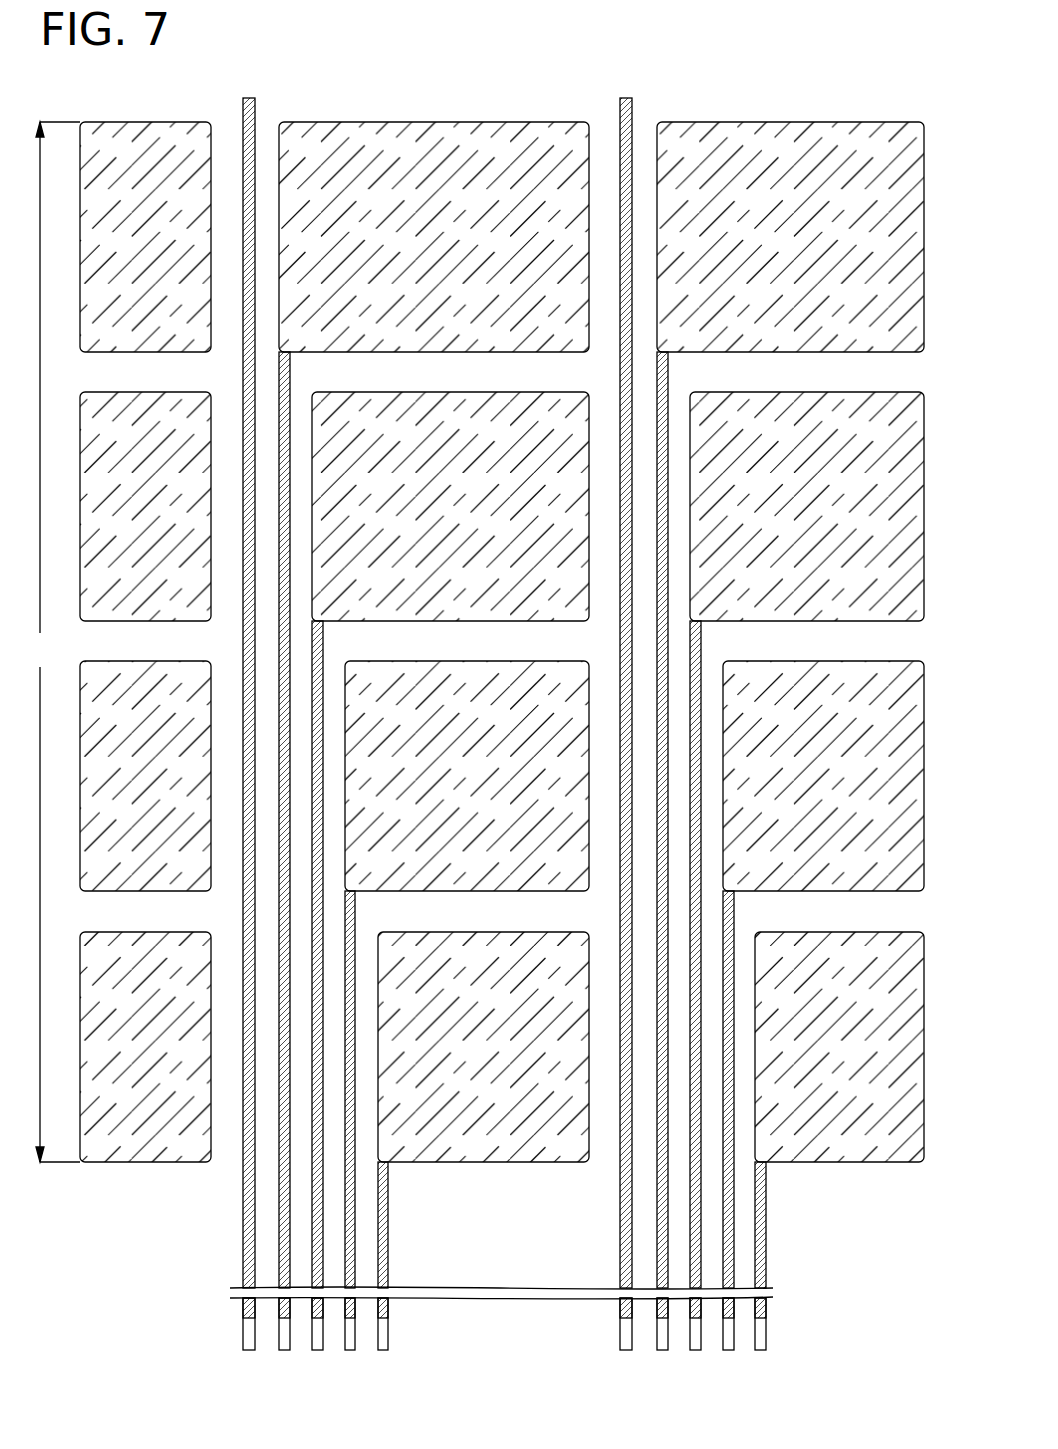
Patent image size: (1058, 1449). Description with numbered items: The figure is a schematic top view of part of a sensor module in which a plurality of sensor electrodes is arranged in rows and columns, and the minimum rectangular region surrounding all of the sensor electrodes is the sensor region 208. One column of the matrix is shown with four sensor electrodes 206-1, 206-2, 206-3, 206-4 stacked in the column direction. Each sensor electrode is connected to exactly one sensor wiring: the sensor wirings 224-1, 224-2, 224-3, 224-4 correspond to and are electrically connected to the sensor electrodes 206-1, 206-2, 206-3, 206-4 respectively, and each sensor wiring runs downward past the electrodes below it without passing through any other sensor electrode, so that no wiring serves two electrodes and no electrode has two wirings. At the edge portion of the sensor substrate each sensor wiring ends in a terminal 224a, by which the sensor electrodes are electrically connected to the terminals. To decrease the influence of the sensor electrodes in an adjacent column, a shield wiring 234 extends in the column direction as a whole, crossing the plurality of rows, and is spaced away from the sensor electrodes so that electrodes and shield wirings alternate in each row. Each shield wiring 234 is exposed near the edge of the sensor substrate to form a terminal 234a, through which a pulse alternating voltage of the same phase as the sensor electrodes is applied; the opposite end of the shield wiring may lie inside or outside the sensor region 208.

The sensor electrode 206-1 is at (434, 237).
The sensor electrode 206-2 is at (450, 506).
The sensor electrode 206-3 is at (467, 776).
The sensor electrode 206-4 is at (483, 1047).
The sensor region 208 is at (51, 642).
The sensor wiring 224-1 is at (284, 368).
The sensor wiring 224-2 is at (317, 638).
The sensor wiring 224-3 is at (351, 1206).
The sensor wiring 224-4 is at (388, 1248).
The terminal 224a is at (388, 1330).
The shield wiring 234 is at (250, 273).
The terminal 234a is at (620, 1333).